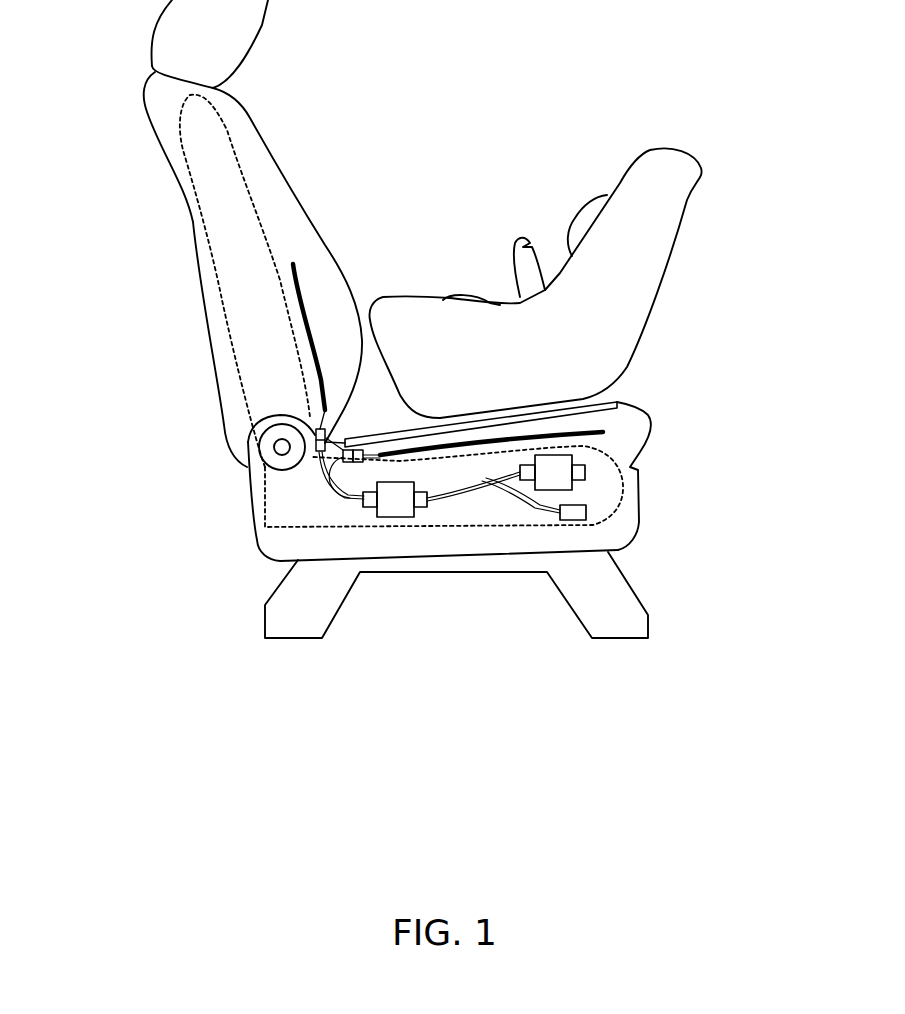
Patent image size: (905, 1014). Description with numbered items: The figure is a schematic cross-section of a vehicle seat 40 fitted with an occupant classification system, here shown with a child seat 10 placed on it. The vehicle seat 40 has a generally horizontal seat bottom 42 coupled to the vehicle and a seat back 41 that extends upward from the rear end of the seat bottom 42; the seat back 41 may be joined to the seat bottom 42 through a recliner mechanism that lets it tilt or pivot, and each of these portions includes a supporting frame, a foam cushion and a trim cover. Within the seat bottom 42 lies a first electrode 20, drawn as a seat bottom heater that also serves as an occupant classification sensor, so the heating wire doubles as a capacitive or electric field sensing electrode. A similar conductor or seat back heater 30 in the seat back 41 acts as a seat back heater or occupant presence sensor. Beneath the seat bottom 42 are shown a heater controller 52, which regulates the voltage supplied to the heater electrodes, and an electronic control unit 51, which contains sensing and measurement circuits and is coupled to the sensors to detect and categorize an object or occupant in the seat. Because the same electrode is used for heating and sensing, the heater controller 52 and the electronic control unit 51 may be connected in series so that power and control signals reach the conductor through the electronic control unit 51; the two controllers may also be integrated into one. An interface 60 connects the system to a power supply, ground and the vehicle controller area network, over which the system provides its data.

The child seat 10 is at (647, 245).
The electrode 20 is at (613, 433).
The seat back heater 30 is at (293, 262).
The vehicle seat 40 is at (240, 512).
The seat back 41 is at (160, 112).
The seat bottom 42 is at (627, 520).
The electronic control unit 51 is at (397, 505).
The heater controller 52 is at (547, 478).
The interface 60 is at (577, 517).